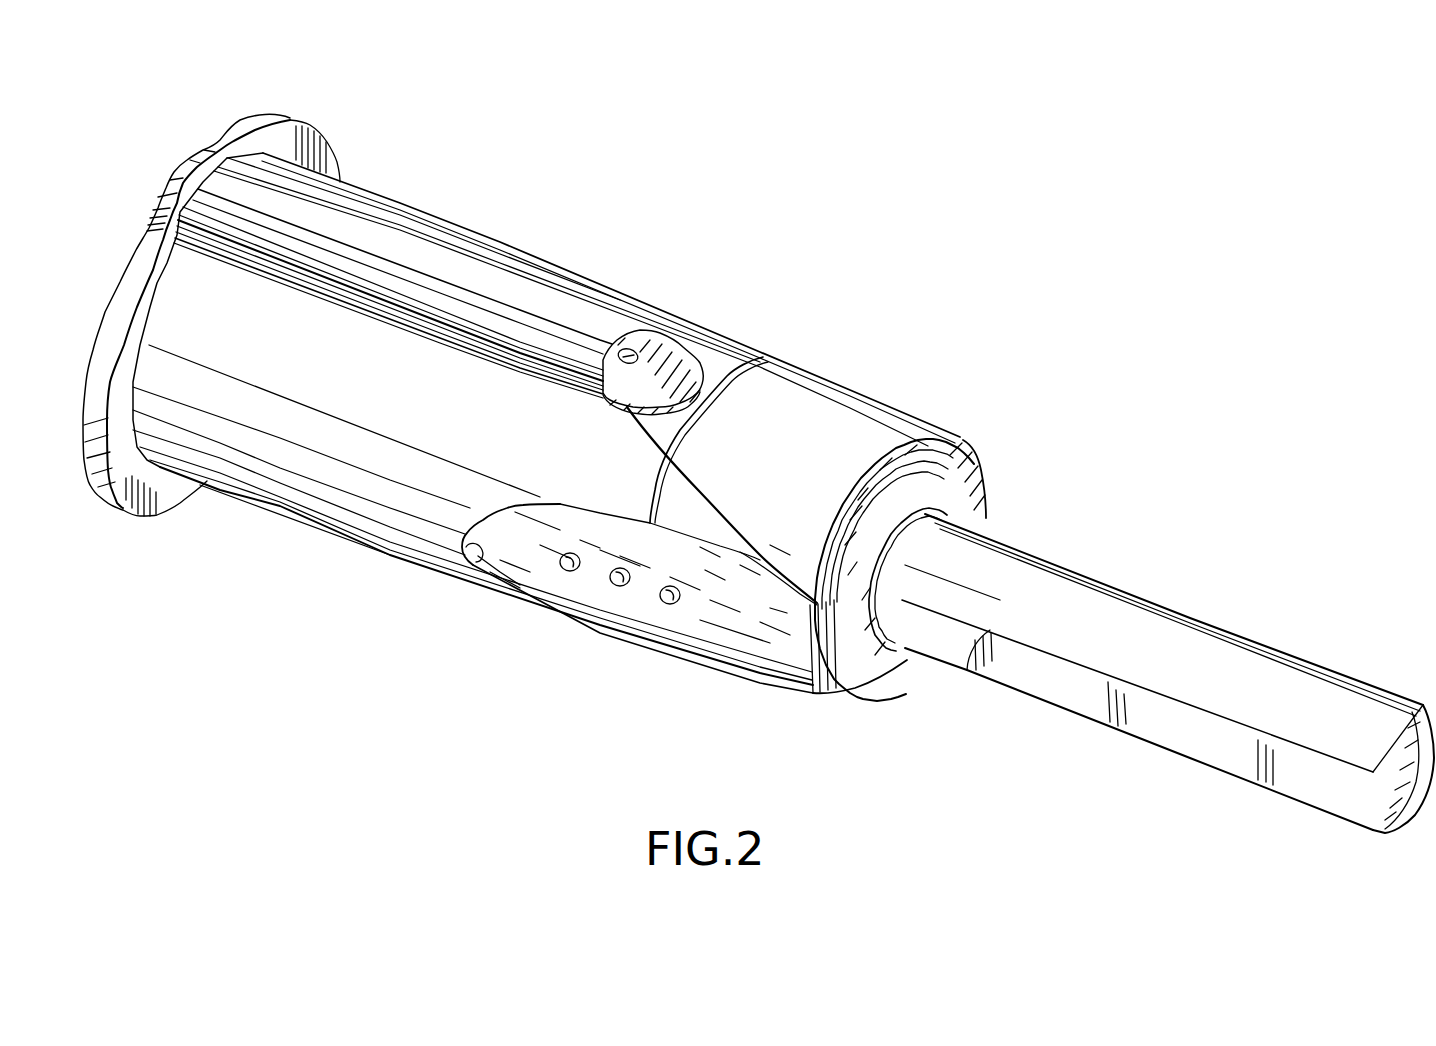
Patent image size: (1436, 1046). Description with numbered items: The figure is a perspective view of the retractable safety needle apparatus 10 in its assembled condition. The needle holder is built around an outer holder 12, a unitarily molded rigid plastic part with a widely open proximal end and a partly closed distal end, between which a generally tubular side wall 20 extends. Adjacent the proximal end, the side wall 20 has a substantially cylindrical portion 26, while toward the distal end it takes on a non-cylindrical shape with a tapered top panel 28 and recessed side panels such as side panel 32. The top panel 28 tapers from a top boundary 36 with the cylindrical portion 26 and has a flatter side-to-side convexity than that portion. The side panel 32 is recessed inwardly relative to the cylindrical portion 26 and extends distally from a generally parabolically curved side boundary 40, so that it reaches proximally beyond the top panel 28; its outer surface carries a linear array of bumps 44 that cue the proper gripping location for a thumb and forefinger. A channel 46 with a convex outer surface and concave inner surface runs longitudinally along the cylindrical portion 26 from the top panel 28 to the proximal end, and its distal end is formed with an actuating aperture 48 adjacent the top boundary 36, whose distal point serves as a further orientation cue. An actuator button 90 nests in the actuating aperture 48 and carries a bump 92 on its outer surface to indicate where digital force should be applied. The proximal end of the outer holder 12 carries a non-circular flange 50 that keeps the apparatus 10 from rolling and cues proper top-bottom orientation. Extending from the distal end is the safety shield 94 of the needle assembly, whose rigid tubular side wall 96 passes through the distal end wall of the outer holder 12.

The retractable safety needle apparatus 10 is at (895, 301).
The outer holder 12 is at (565, 200).
The side wall 20 is at (305, 526).
The cylindrical portion 26 is at (386, 531).
The top panel 28 is at (815, 462).
The side panel 32 is at (740, 662).
The top boundary 36 is at (731, 357).
The side boundary 40 is at (473, 558).
The bumps 44 is at (616, 586).
The channel 46 is at (375, 226).
The actuating aperture 48 is at (614, 350).
The flange 50 is at (290, 120).
The actuator button 90 is at (681, 368).
The bump 92 is at (647, 350).
The safety shield 94 is at (1208, 588).
The tubular side wall 96 is at (1100, 583).